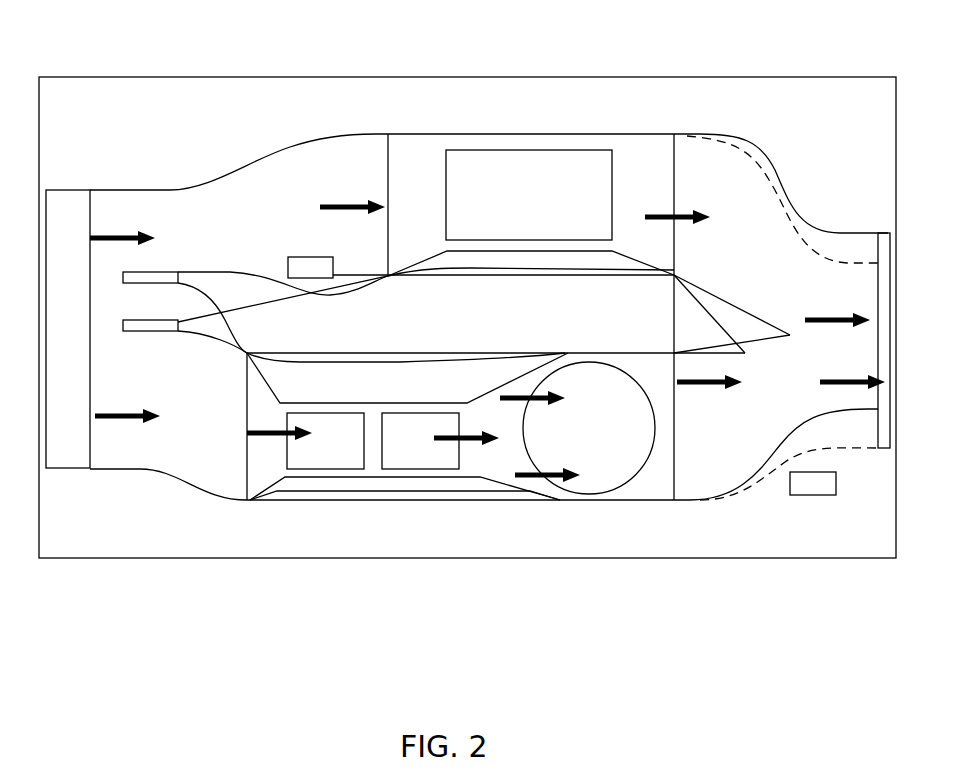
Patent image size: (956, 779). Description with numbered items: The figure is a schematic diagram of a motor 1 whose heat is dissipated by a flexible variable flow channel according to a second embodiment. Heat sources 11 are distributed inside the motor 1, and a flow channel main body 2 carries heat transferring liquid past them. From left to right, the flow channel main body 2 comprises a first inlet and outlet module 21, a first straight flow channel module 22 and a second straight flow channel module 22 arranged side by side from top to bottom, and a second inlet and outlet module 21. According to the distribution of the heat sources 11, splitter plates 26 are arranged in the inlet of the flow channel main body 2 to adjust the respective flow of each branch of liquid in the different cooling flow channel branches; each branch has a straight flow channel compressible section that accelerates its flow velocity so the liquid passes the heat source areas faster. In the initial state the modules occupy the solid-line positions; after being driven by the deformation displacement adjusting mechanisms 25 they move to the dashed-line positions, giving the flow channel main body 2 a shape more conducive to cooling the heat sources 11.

The motor 1 is at (308, 82).
The flow channel main body 2 is at (232, 484).
The heat source 11 is at (605, 378).
The inlet and outlet module 21 is at (65, 440).
The straight flow channel module 22 is at (322, 380).
The deformation displacement adjusting mechanism 25 is at (313, 257).
The splitter plate 26 is at (158, 323).